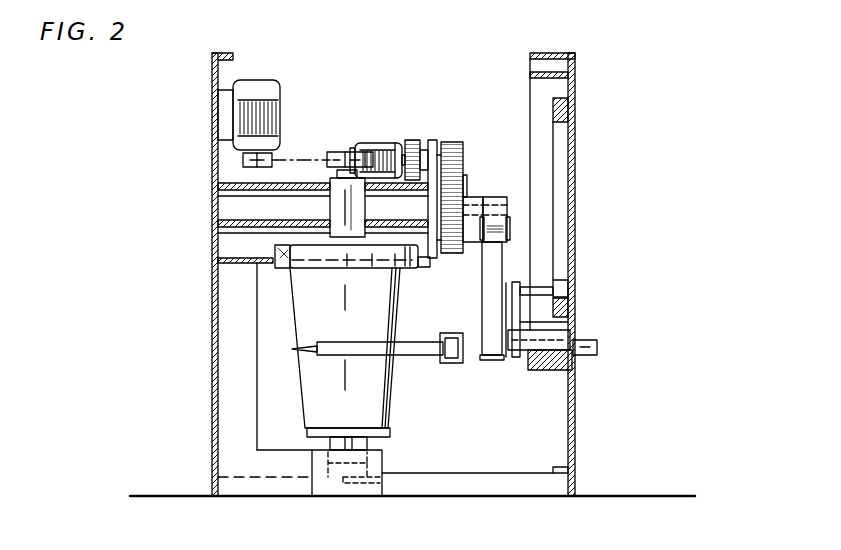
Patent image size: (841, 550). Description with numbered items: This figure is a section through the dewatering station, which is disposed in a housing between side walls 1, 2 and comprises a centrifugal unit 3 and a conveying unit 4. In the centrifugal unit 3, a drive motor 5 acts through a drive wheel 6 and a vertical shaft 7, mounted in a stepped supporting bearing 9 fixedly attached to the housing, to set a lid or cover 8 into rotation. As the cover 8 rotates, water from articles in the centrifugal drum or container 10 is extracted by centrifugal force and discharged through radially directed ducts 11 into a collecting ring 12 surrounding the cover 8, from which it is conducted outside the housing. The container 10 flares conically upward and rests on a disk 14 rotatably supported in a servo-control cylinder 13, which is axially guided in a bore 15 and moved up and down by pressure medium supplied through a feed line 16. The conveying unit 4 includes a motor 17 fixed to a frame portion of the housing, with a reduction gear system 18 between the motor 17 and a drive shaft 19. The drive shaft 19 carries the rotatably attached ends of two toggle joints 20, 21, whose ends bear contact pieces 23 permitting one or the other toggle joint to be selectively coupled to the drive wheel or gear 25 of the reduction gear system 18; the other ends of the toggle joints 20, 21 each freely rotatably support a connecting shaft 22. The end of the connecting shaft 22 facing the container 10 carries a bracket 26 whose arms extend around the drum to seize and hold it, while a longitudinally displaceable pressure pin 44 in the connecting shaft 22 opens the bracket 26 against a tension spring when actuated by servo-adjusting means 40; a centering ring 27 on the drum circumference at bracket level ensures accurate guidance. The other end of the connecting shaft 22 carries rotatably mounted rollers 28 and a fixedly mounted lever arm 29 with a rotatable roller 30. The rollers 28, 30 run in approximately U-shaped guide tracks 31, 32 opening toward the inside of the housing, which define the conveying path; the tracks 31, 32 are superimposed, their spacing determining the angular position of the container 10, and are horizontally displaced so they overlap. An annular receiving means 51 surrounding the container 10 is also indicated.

The side wall 1 is at (213, 72).
The side wall 2 is at (573, 70).
The centrifugal unit 3 is at (303, 145).
The conveying unit 4 is at (415, 138).
The drive motor 5 is at (255, 78).
The drive wheel 6 is at (337, 150).
The vertical shaft 7 is at (330, 236).
The lid or cover 8 is at (292, 267).
The stepped supporting bearing 9 is at (330, 197).
The centrifugal drum or container 10 is at (293, 322).
The ducts 11 is at (287, 260).
The collecting ring 12 is at (244, 250).
The servo-control cylinder 13 is at (367, 444).
The disk 14 is at (305, 432).
The bore 15 is at (330, 477).
The feed line 16 is at (367, 487).
The motor 17 is at (370, 140).
The reduction gear system 18 is at (450, 140).
The drive shaft 19 is at (497, 195).
The toggle joint 20 is at (462, 301).
The toggle joint 21 is at (482, 262).
The connecting shaft 22 is at (523, 352).
The contact pieces 23 is at (474, 195).
The drive wheel or gear 25 is at (466, 178).
The bracket 26 is at (437, 356).
The centering ring 27 is at (296, 352).
The rollers 28 is at (550, 342).
The lever arm 29 is at (522, 323).
The roller 30 is at (563, 282).
The guide track 31 is at (553, 63).
The guide track 32 is at (560, 110).
The servo-adjusting means 40 is at (597, 352).
The pressure pin 44 is at (473, 350).
The annular receiving means 51 is at (442, 370).